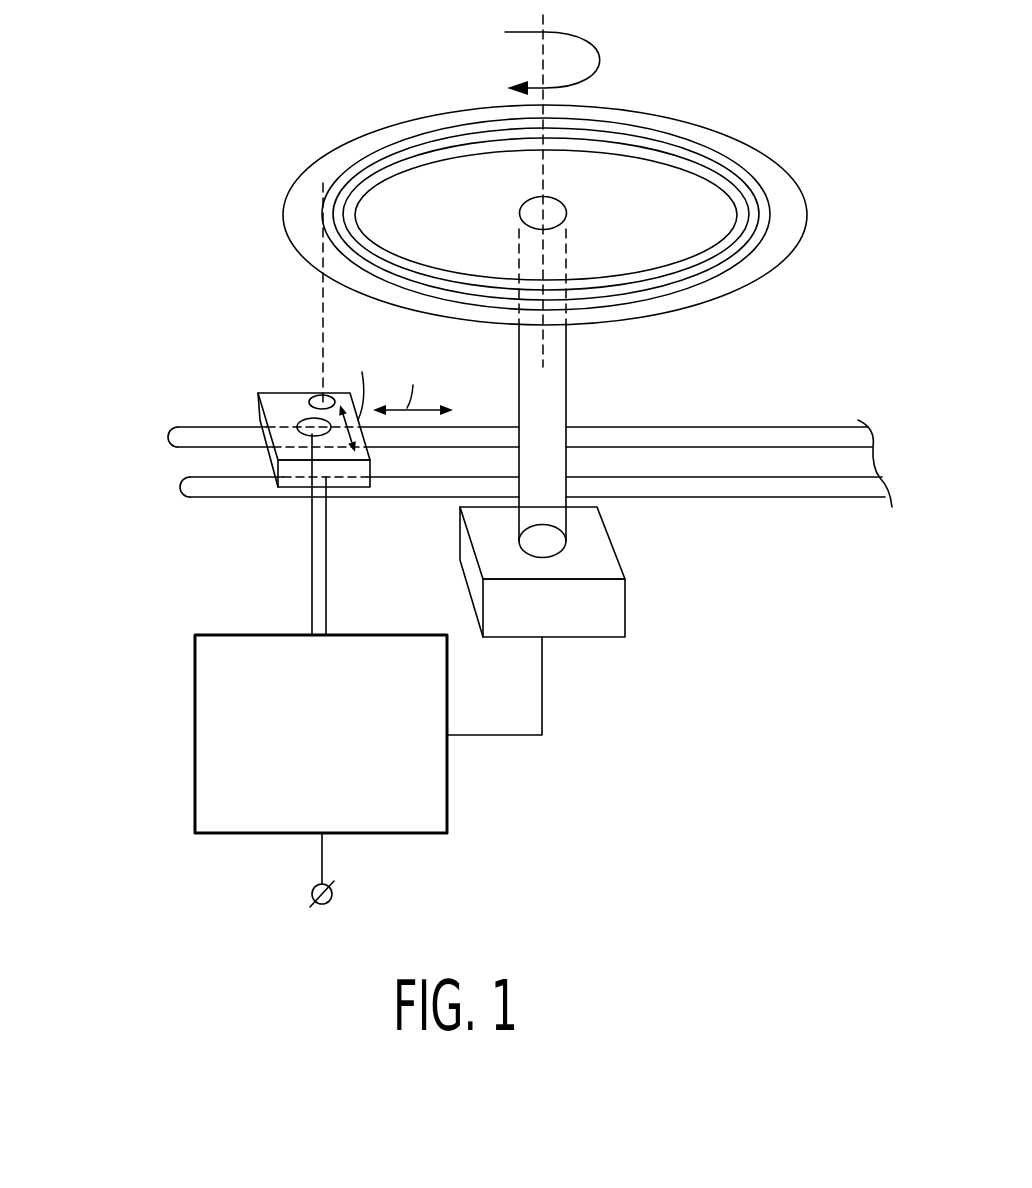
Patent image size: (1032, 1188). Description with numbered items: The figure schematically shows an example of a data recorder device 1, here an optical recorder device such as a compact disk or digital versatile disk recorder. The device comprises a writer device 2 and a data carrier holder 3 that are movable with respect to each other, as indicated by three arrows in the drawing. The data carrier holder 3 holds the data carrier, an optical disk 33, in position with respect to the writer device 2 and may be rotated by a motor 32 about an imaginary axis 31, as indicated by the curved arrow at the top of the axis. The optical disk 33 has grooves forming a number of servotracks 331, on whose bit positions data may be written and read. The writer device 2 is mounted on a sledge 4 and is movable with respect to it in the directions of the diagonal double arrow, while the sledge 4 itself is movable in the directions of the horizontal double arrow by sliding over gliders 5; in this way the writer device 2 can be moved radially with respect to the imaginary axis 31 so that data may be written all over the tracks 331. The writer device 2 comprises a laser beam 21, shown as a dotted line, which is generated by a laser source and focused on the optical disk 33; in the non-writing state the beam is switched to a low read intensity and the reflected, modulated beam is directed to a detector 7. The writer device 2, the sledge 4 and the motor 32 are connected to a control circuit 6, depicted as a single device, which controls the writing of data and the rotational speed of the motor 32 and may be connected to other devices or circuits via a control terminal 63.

The data recorder device 1 is at (104, 571).
The writer device 2 is at (305, 419).
The laser beam 21 is at (323, 233).
The data carrier holder 3 is at (548, 399).
The imaginary axis 31 is at (547, 14).
The motor 32 is at (612, 620).
The optical disk 33 is at (545, 194).
The servotracks 331 is at (683, 147).
The sledge 4 is at (294, 400).
The gliders 5 is at (230, 488).
The control circuit 6 is at (193, 749).
The control terminal 63 is at (310, 892).
The detector 7 is at (317, 394).